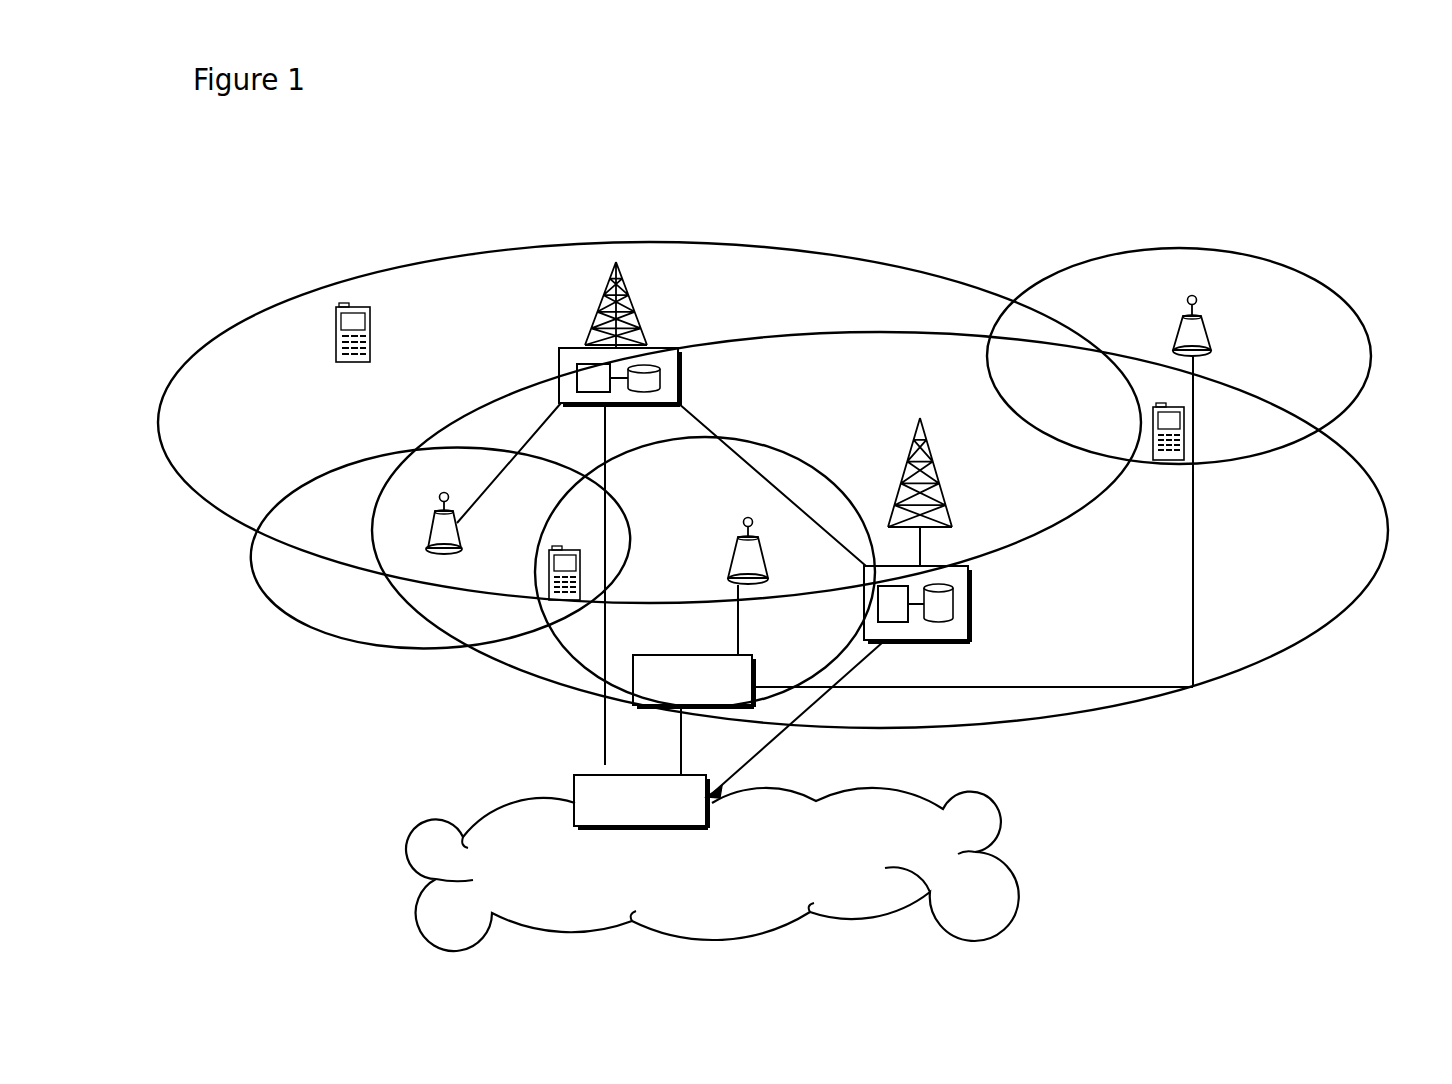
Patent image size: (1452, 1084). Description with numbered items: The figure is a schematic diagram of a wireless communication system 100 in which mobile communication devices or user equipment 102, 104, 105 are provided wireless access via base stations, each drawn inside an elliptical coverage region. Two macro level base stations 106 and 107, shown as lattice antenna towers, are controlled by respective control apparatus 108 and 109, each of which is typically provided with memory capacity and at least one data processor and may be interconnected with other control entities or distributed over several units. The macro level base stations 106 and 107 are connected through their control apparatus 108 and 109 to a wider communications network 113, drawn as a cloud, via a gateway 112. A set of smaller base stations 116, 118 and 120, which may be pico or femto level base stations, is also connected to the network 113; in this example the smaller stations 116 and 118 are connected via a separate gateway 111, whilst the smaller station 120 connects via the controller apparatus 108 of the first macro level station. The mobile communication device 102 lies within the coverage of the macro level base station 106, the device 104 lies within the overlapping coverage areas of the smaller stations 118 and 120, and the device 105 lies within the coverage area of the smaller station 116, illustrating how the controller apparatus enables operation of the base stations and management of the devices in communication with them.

The wireless communication system 100 is at (258, 292).
The mobile communication device 102 is at (333, 345).
The mobile communication device 104 is at (550, 577).
The mobile communication device 105 is at (1171, 465).
The macro level base station 106 is at (598, 313).
The macro level base station 107 is at (943, 490).
The control apparatus 108 is at (559, 366).
The control apparatus 109 is at (957, 630).
The gateway 111 is at (641, 686).
The gateway 112 is at (573, 777).
The communications network 113 is at (495, 837).
The smaller base station 116 is at (1179, 331).
The smaller base station 118 is at (747, 567).
The smaller base station 120 is at (435, 530).